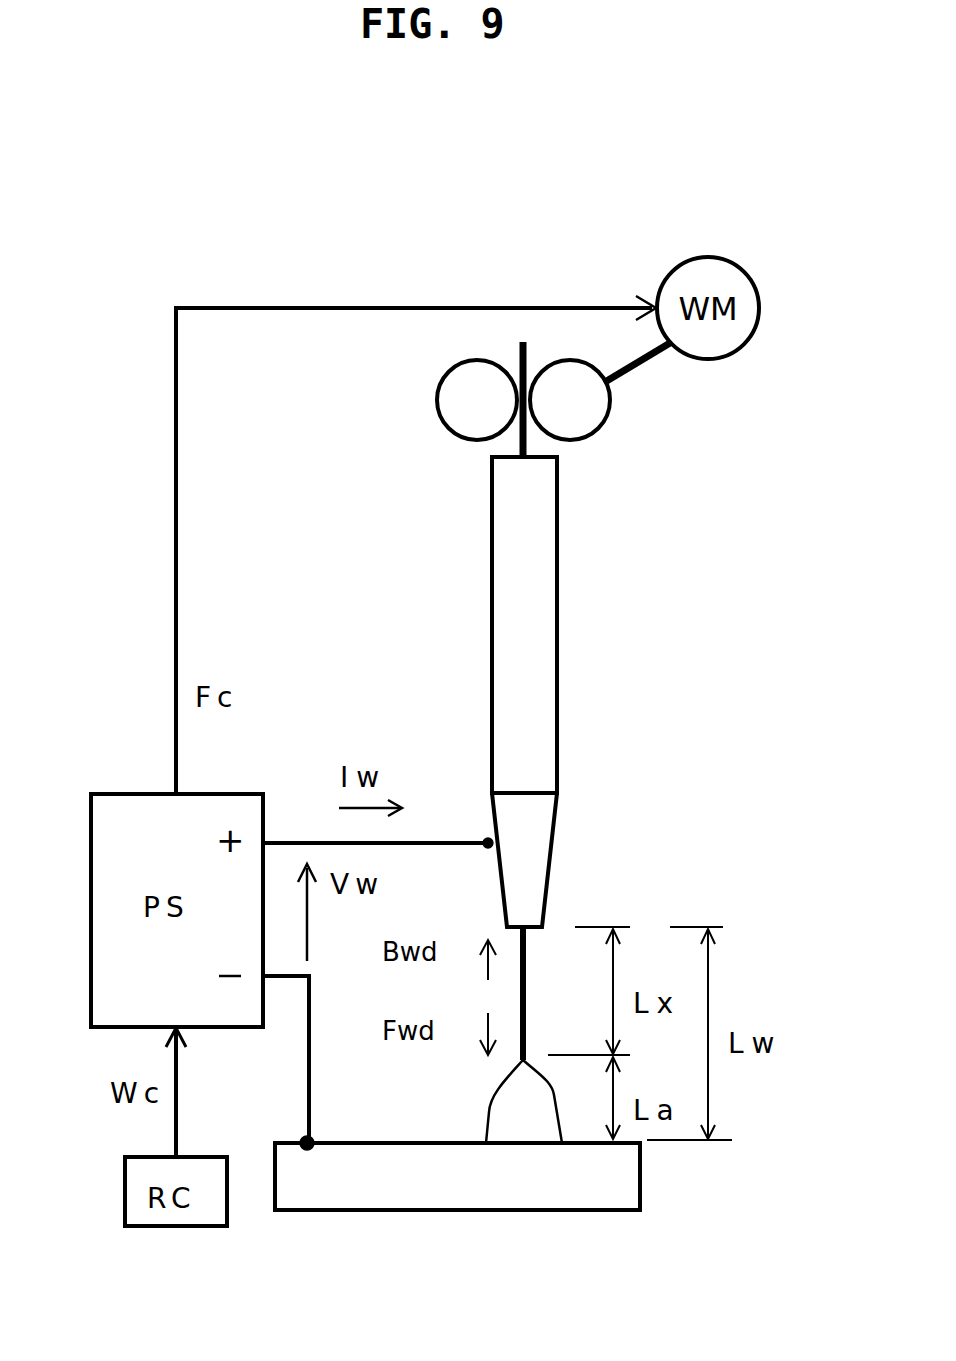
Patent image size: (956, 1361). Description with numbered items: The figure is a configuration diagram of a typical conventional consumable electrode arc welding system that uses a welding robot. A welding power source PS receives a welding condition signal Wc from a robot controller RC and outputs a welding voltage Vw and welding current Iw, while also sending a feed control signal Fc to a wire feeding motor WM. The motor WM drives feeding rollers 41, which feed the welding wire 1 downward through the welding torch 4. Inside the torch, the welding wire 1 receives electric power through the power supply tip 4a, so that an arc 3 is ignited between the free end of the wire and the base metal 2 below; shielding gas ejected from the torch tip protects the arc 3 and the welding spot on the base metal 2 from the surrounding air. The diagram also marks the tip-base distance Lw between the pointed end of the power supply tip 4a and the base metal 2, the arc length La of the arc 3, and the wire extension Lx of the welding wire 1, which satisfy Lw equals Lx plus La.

The welding wire 1 is at (528, 955).
The base metal 2 is at (442, 1212).
The arc 3 is at (490, 1112).
The welding torch 4 is at (557, 627).
The power supply tip 4a is at (548, 875).
The feeding rollers 41 is at (590, 442).